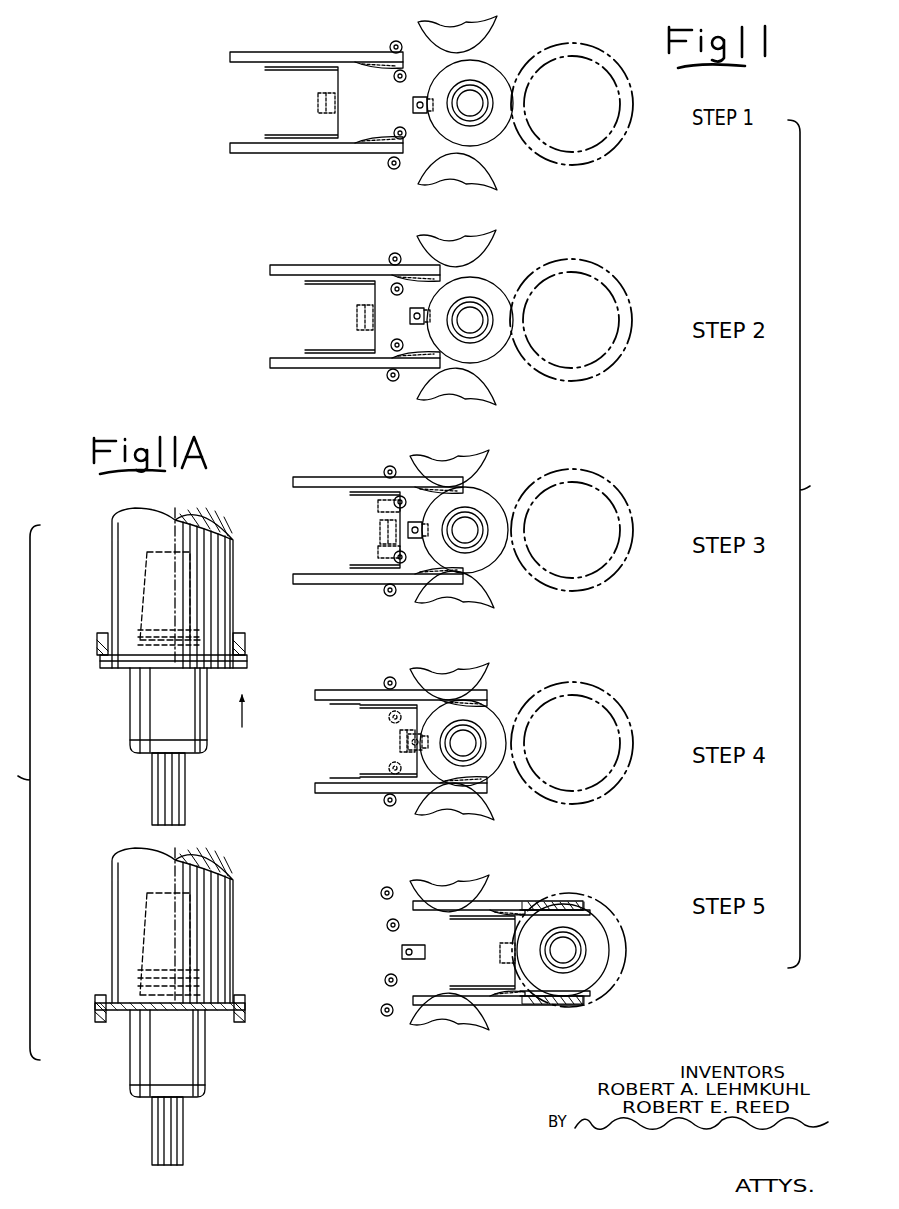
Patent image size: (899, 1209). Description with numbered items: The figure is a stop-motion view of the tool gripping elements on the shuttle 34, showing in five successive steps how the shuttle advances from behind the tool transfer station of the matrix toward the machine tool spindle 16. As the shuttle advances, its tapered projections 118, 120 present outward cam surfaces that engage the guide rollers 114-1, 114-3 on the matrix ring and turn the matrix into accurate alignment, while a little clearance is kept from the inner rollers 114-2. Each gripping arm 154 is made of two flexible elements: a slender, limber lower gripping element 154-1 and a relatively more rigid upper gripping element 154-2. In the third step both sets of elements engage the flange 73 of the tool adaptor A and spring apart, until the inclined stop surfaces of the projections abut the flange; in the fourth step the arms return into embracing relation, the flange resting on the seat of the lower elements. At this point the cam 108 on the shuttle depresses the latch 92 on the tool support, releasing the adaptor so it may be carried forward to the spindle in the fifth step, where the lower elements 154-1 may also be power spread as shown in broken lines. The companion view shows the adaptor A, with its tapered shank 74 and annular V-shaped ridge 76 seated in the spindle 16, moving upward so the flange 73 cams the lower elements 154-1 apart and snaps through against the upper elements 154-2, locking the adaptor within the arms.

In FIG. 11, the machine tool spindle 16 is at (622, 87).
In FIG. 11A, the machine tool spindle 16 is at (110, 542).
In FIG. 11, the tool transfer shuttle 34 is at (263, 106).
In FIG. 11, the flange 73 is at (487, 67).
In FIG. 11A, the flange 73 is at (118, 672).
In FIG. 11, the tapered shank 74 is at (480, 137).
In FIG. 11A, the tapered shank 74 is at (140, 588).
In FIG. 11A, the annular V-shaped ridge 76 is at (135, 637).
In FIG. 11, the latch 92 is at (420, 97).
In FIG. 11, the cam 108 is at (318, 103).
In FIG. 11, the roller 114-1 is at (392, 170).
In FIG. 11, the inner rollers 114-2 is at (400, 82).
In FIG. 11, the roller 114-3 is at (405, 28).
In FIG. 11, the tapered projection 118 is at (397, 130).
In FIG. 11, the tapered projection 120 is at (352, 64).
In FIG. 11, the gripping arm 154 is at (358, 52).
In FIG. 11, the lower gripping element 154-1 is at (386, 516).
In FIG. 11A, the lower gripping element 154-1 is at (100, 657).
In FIG. 11, the upper gripping element 154-2 is at (430, 470).
In FIG. 11A, the upper gripping element 154-2 is at (97, 640).
In FIG. 11A, the tool adaptor A is at (130, 730).